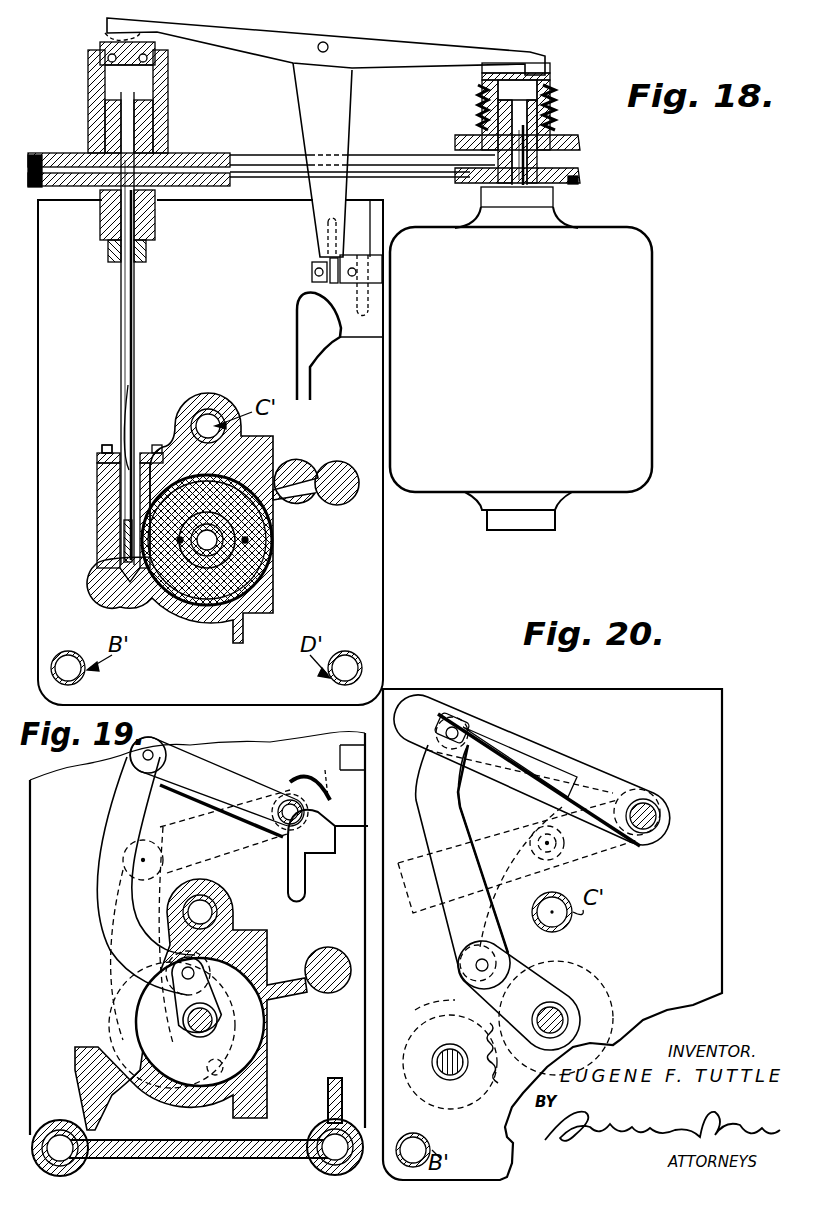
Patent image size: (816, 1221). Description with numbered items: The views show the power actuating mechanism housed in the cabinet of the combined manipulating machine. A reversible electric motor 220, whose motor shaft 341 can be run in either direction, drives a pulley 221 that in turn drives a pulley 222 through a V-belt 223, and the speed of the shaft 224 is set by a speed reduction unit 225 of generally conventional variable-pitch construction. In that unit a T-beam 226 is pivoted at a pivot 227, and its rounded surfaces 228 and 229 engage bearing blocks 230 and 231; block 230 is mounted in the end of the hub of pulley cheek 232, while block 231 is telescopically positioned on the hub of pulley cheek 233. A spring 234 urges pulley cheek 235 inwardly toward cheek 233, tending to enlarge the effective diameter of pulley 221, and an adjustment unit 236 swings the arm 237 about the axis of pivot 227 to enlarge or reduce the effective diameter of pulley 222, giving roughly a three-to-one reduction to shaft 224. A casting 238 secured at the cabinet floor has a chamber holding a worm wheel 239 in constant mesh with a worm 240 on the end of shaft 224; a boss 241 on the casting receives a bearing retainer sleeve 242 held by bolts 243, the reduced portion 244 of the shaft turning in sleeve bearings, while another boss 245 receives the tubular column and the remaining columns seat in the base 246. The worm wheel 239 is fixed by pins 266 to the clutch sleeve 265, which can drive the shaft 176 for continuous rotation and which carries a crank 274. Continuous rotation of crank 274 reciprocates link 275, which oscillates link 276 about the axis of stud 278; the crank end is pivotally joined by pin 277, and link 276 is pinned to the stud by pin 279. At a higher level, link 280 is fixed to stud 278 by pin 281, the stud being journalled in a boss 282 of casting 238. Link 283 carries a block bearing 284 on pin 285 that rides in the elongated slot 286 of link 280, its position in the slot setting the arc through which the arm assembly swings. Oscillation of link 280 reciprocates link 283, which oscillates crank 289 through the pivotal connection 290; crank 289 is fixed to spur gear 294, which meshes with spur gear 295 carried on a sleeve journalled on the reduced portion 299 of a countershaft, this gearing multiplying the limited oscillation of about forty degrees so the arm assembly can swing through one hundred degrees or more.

In FIG. 18, the electric motor 220 is at (637, 432).
In FIG. 18, the pulley 221 is at (578, 168).
In FIG. 18, the pulley 222 is at (205, 152).
In FIG. 18, the V-belt 223 is at (375, 152).
In FIG. 18, the shaft 224 is at (137, 358).
In FIG. 18, the speed reduction unit 225 is at (560, 74).
In FIG. 18, the T-beam 226 is at (345, 36).
In FIG. 18, the pivot 227 is at (329, 47).
In FIG. 18, the rounded surface 228 is at (107, 38).
In FIG. 18, the rounded surface 229 is at (548, 66).
In FIG. 18, the bearing block 230 is at (90, 58).
In FIG. 18, the bearing block 231 is at (552, 90).
In FIG. 18, the pulley cheek 232 is at (160, 152).
In FIG. 18, the pulley cheek 233 is at (578, 182).
In FIG. 18, the spring 234 is at (553, 110).
In FIG. 18, the pulley cheek 235 is at (545, 152).
In FIG. 18, the adjustment unit 236 is at (310, 265).
In FIG. 18, the arm 237 is at (350, 186).
In FIG. 18, the casting 238 is at (275, 458).
In FIG. 19, the casting 238 is at (273, 940).
In FIG. 18, the worm wheel 239 is at (265, 547).
In FIG. 18, the worm 240 is at (124, 537).
In FIG. 18, the boss 241 is at (97, 485).
In FIG. 18, the bearing retainer sleeve 242 is at (100, 455).
In FIG. 18, the bolts 243 is at (150, 448).
In FIG. 18, the reduced portion of the shaft 244 is at (138, 392).
In FIG. 18, the boss 245 is at (220, 412).
In FIG. 18, the base 246 is at (372, 558).
In FIG. 18, the clutch sleeve 265 is at (218, 550).
In FIG. 18, the pins 266 is at (178, 545).
In FIG. 18, the bearing 176 is at (222, 548).
In FIG. 19, the bearing 176 is at (216, 1016).
In FIG. 20, the bearing 176 is at (563, 1012).
In FIG. 18, the motor shaft 341 is at (518, 175).
In FIG. 19, the crank 274 is at (204, 993).
In FIG. 19, the link 275 is at (110, 910).
In FIG. 19, the link 276 is at (183, 755).
In FIG. 19, the pin 277 is at (195, 777).
In FIG. 19, the stud 278 is at (288, 808).
In FIG. 20, the stud 278 is at (657, 818).
In FIG. 19, the pin 279 is at (323, 770).
In FIG. 20, the link 280 is at (578, 766).
In FIG. 20, the pin 281 is at (655, 805).
In FIG. 20, the boss 282 is at (622, 786).
In FIG. 20, the link 283 is at (438, 832).
In FIG. 20, the block bearing 284 is at (480, 740).
In FIG. 20, the pin 285 is at (453, 727).
In FIG. 20, the elongated slot 286 is at (525, 755).
In FIG. 20, the crank 289 is at (520, 965).
In FIG. 20, the pivotal connection 290 is at (476, 965).
In FIG. 20, the spur gear 294 is at (588, 970).
In FIG. 20, the spur gear 295 is at (455, 992).
In FIG. 20, the reduced portion of countershaft 299 is at (443, 1068).